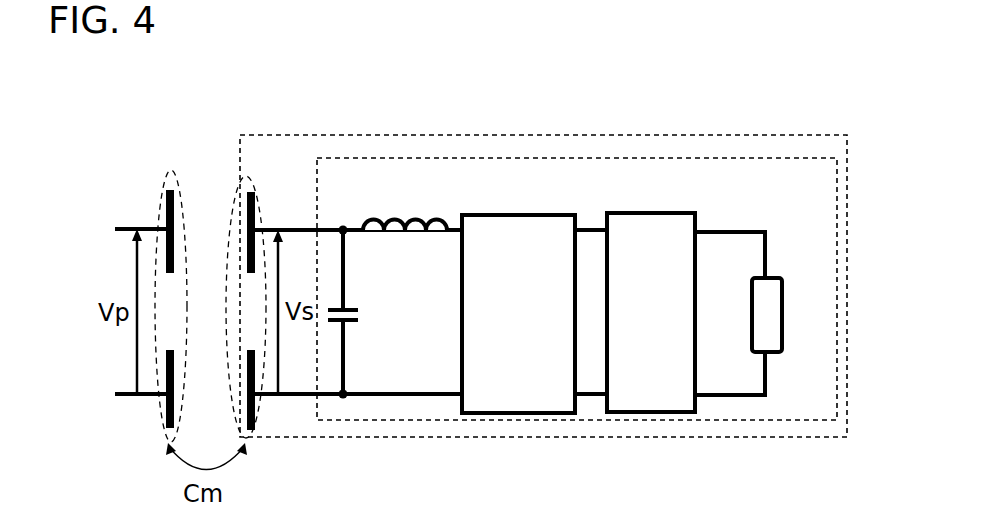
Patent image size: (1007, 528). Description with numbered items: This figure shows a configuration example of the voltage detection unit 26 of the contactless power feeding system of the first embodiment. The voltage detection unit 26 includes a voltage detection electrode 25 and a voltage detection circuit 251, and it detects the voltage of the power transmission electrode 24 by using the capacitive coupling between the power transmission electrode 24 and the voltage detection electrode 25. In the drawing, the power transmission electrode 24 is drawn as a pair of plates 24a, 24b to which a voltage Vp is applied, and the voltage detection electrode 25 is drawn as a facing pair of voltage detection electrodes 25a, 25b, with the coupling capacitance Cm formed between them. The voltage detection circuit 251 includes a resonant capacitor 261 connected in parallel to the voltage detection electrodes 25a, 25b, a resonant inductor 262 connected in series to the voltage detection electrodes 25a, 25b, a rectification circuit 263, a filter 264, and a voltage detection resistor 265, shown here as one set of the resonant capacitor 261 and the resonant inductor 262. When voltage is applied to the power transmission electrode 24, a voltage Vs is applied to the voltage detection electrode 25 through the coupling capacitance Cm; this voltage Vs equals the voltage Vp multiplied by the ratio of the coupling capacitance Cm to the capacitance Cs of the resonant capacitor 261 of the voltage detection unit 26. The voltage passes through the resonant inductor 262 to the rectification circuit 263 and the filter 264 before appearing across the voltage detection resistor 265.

The power transmission electrode 24 is at (127, 283).
The power transmission electrode 24a is at (161, 205).
The power transmission electrode 24b is at (162, 411).
The voltage detection electrode 25 is at (293, 304).
The voltage detection electrode 25a is at (256, 199).
The voltage detection electrode 25b is at (258, 417).
The voltage detection unit 26 is at (757, 135).
The voltage detection circuit 251 is at (742, 424).
The resonant capacitor 261 is at (343, 308).
The resonant inductor 262 is at (388, 221).
The rectification circuit 263 is at (482, 215).
The filter 264 is at (637, 212).
The voltage detection resistor 265 is at (777, 278).